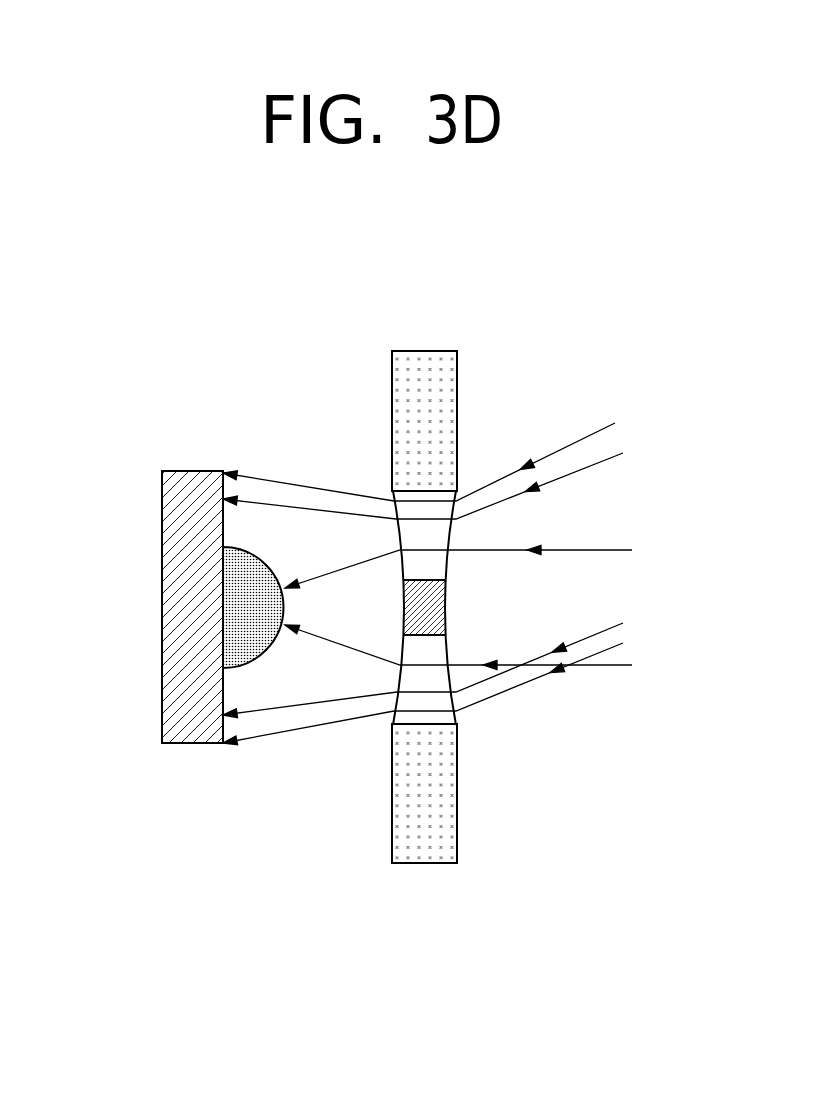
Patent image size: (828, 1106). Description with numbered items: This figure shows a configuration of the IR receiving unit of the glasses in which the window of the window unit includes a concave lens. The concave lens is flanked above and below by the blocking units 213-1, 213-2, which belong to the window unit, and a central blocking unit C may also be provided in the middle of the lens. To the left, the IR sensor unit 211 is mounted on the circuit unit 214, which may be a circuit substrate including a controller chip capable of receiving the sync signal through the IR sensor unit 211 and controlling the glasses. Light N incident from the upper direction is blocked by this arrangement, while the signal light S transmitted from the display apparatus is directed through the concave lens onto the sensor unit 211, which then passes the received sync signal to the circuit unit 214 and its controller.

The blocking unit 213-1 is at (447, 358).
The blocking unit 213-2 is at (447, 860).
The central blocking unit C is at (421, 604).
The circuit unit 214 is at (170, 600).
The IR sensor unit 211 is at (263, 577).
The light incident from the upper direction N is at (437, 583).
The signal light S is at (467, 609).